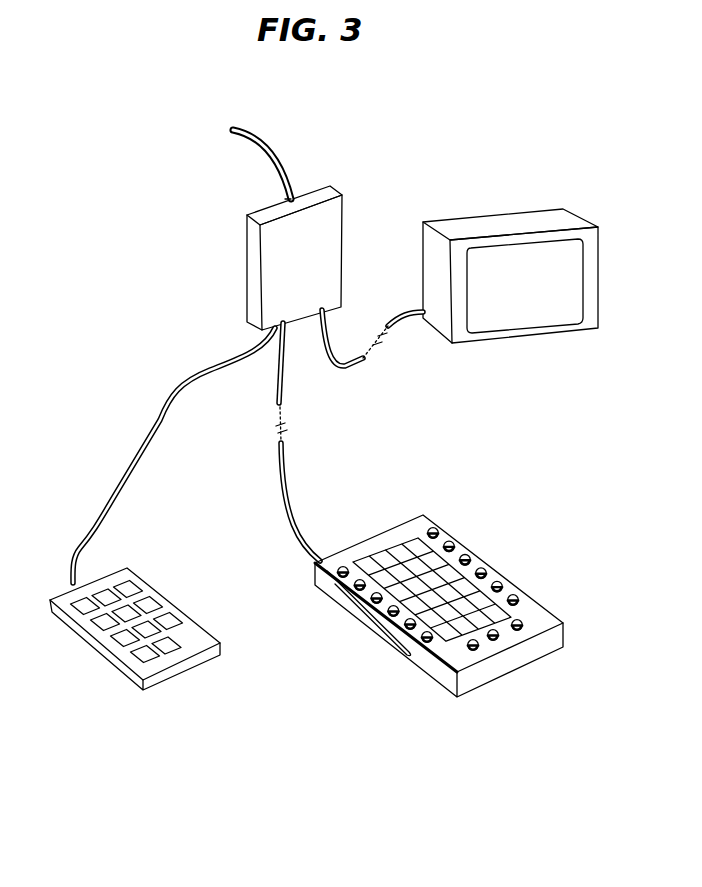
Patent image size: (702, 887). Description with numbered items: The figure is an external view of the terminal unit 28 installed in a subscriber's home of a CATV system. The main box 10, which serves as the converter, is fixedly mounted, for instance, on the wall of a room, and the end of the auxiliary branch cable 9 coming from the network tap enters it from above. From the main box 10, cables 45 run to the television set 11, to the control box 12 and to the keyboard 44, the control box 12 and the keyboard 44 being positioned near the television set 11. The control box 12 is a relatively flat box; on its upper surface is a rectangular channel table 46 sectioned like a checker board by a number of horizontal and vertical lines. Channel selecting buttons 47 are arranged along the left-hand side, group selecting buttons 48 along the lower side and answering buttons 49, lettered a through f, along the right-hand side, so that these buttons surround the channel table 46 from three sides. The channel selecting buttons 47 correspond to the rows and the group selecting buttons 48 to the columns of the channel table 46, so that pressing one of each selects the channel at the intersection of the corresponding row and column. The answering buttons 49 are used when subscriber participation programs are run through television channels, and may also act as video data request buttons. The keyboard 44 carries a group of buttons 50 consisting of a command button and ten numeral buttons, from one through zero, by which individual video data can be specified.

The auxiliary branch cable 9 is at (278, 163).
The main box 10 is at (332, 232).
The television set 11 is at (519, 222).
The control box 12 is at (315, 564).
The terminal unit 28 is at (234, 294).
The keyboard 44 is at (198, 663).
The cables 45 is at (287, 380).
The channel table 46 is at (410, 547).
The channel selecting buttons 47 is at (367, 615).
The group selecting buttons 48 is at (465, 655).
The answering buttons 49 is at (463, 503).
The group of buttons 50 is at (213, 632).